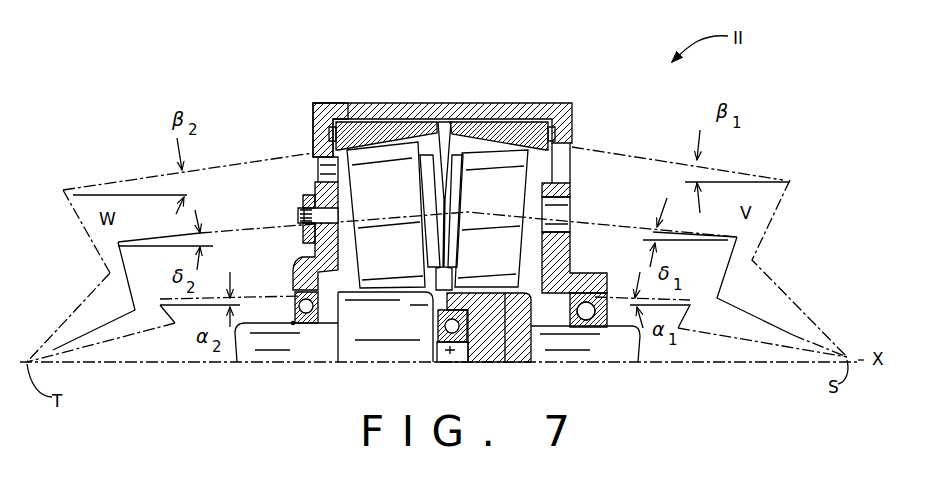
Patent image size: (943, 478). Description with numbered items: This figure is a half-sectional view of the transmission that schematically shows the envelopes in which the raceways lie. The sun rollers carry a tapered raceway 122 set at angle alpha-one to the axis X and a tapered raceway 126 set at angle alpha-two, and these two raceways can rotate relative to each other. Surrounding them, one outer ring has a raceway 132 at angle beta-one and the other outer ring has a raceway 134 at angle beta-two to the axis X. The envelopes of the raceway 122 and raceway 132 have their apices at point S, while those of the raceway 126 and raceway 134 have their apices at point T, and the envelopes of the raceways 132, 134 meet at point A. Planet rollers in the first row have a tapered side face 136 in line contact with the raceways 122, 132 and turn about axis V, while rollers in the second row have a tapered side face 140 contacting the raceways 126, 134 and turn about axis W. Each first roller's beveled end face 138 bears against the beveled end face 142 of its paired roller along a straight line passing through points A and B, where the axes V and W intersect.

The tapered raceway 122 is at (506, 345).
The tapered raceway 126 is at (376, 345).
The raceway 132 is at (523, 138).
The raceway 134 is at (387, 130).
The tapered side face 136 is at (572, 101).
The beveled end face 138 is at (448, 118).
The tapered side face 140 is at (348, 103).
The beveled end face 142 is at (436, 120).